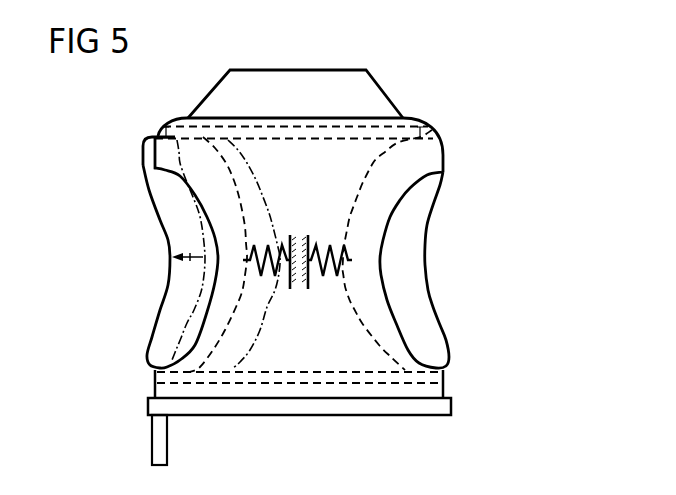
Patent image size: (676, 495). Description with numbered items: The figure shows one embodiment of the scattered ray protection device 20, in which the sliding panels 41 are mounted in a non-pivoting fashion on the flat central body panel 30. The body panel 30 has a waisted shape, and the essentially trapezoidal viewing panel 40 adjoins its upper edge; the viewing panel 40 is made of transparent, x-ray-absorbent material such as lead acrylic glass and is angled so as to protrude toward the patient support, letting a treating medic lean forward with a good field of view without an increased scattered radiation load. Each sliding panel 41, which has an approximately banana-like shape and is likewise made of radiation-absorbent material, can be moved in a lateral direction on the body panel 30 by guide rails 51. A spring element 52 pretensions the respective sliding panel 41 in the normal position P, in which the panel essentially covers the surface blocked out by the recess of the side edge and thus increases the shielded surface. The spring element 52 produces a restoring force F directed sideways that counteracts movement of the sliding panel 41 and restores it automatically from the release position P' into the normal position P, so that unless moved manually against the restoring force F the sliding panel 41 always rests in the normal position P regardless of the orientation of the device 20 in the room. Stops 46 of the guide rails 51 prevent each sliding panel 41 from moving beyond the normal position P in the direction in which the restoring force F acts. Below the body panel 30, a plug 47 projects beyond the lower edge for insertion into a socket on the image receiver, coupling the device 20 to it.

The scattered ray protection device 20 is at (471, 310).
The body panel 30 is at (328, 358).
The viewing panel 40 is at (297, 68).
The sliding panel 41 is at (256, 166).
The stops 46 is at (166, 133).
The plug 47 is at (152, 442).
The guide rails 51 is at (354, 123).
The spring element 52 is at (339, 247).
The normal position P is at (414, 250).
The release position P' is at (268, 254).
The restoring force F is at (190, 257).